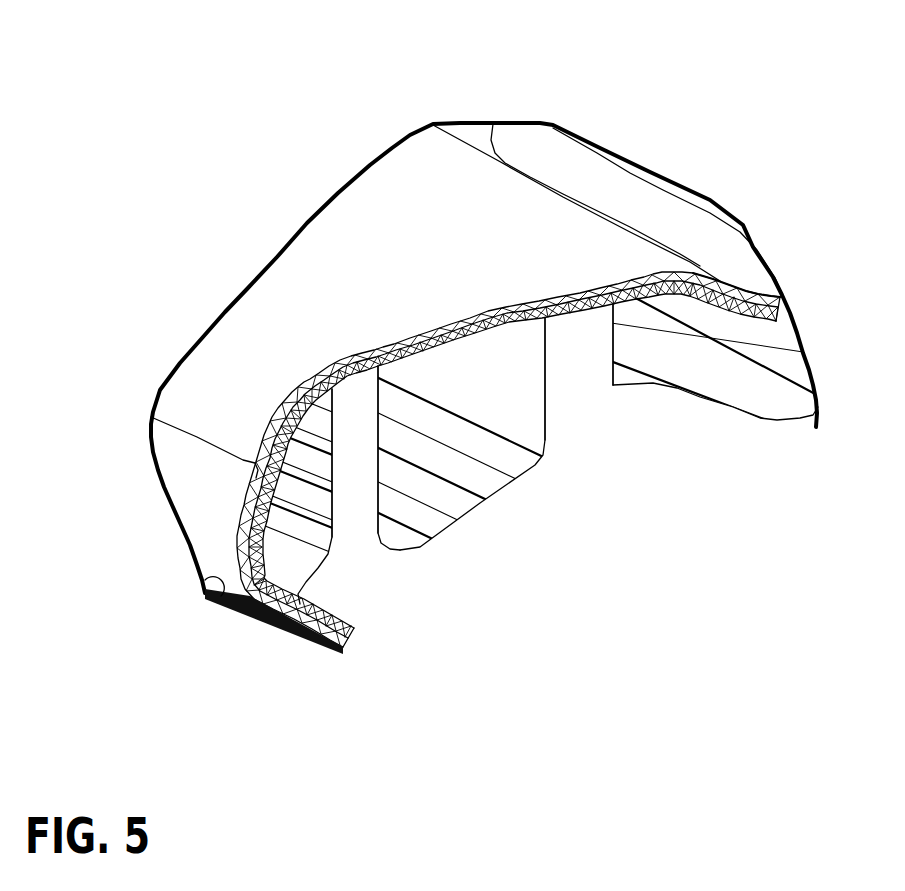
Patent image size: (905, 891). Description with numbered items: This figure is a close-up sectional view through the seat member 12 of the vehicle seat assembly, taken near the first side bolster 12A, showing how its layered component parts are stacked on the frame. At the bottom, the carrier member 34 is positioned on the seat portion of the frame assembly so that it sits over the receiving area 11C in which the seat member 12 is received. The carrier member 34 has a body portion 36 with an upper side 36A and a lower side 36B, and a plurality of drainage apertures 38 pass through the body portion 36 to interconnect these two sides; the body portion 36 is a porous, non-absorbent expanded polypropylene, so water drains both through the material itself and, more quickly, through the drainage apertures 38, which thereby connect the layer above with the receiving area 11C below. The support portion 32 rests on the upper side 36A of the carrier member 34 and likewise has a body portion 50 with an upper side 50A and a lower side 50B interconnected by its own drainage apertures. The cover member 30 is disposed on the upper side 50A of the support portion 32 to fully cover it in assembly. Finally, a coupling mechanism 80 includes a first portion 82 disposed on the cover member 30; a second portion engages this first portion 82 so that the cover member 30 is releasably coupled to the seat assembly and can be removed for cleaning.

The seat member 12 is at (345, 160).
The first side bolster 12A is at (428, 167).
The cover member 30 is at (332, 373).
The support portion 32 is at (285, 399).
The carrier member 34 is at (472, 400).
The body portion 36 is at (490, 462).
The upper side 36A is at (416, 400).
The lower side 36B is at (492, 458).
The drainage apertures 38 is at (353, 500).
The receiving area 11C is at (556, 462).
The body portion 50 is at (652, 293).
The upper side 50A is at (603, 302).
The lower side 50B is at (651, 287).
The coupling mechanism 80 is at (224, 618).
The first portion 82 is at (204, 583).